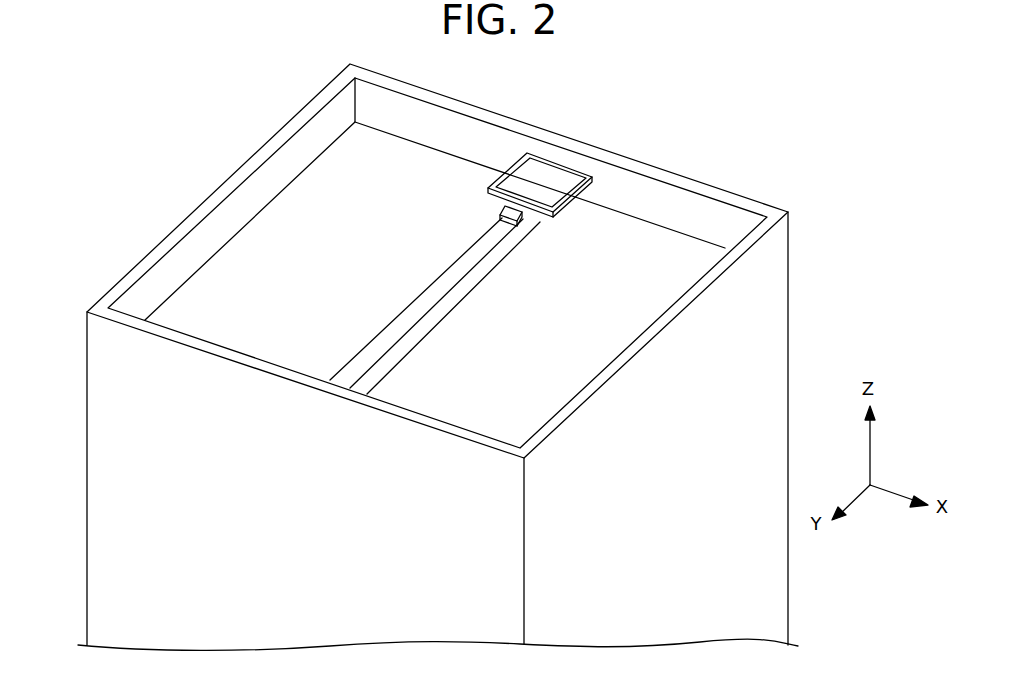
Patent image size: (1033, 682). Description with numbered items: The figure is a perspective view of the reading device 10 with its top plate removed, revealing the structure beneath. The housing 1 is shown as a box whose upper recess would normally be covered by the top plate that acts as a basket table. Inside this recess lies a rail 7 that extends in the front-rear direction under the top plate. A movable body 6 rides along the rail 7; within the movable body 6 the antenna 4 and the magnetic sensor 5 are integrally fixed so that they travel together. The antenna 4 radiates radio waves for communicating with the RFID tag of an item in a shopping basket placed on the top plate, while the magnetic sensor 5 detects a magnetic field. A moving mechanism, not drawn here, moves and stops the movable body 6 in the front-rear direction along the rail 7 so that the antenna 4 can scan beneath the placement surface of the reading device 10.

The housing 1 is at (97, 378).
The antenna 4 is at (535, 173).
The magnetic sensor 5 is at (525, 222).
The movable body 6 is at (627, 88).
The rail 7 is at (423, 298).
The reading device 10 is at (727, 127).